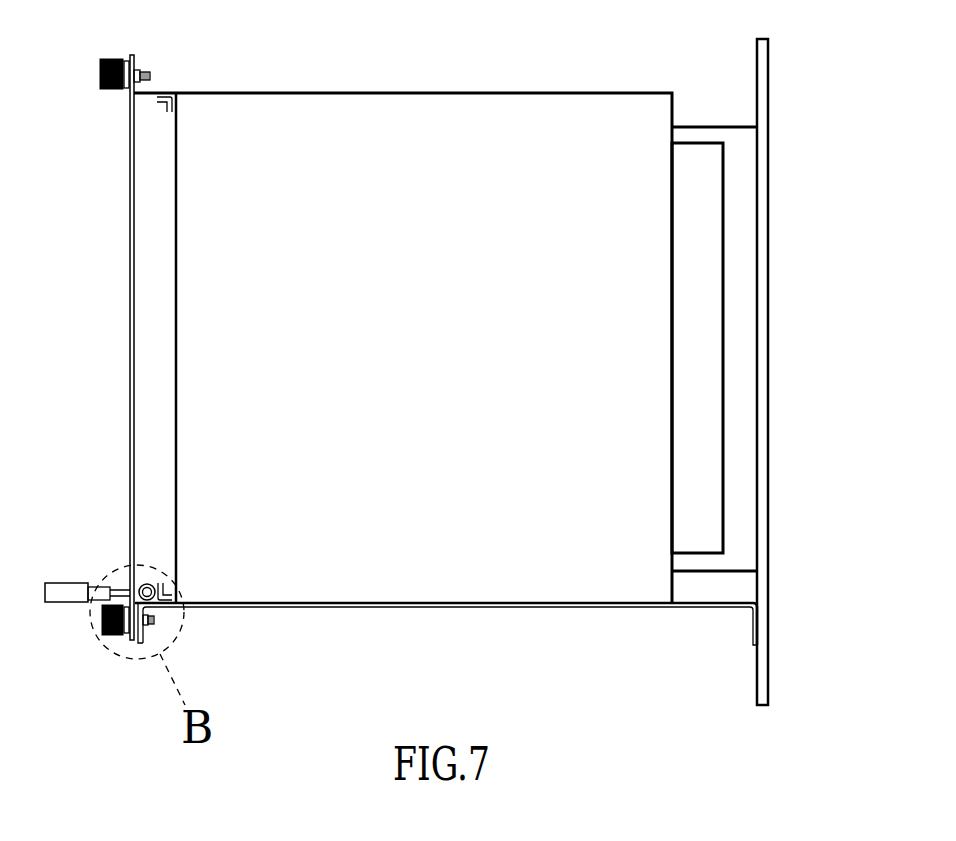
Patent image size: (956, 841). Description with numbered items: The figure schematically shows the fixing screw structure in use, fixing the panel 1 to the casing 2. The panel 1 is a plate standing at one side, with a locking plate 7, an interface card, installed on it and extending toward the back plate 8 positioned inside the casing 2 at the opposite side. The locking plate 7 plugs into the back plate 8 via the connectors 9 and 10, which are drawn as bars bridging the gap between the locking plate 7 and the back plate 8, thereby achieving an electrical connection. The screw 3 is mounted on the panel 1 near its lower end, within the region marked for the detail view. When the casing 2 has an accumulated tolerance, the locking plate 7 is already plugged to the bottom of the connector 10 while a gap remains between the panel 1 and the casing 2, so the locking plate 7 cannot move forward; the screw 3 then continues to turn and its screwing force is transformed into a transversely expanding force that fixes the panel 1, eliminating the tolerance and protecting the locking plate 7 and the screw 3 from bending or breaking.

The panel 1 is at (118, 347).
The casing 2 is at (292, 617).
The screw 3 is at (97, 650).
The locking plate 7 is at (424, 80).
The back plate 8 is at (781, 266).
The connector 9 is at (697, 127).
The connector 10 is at (714, 585).